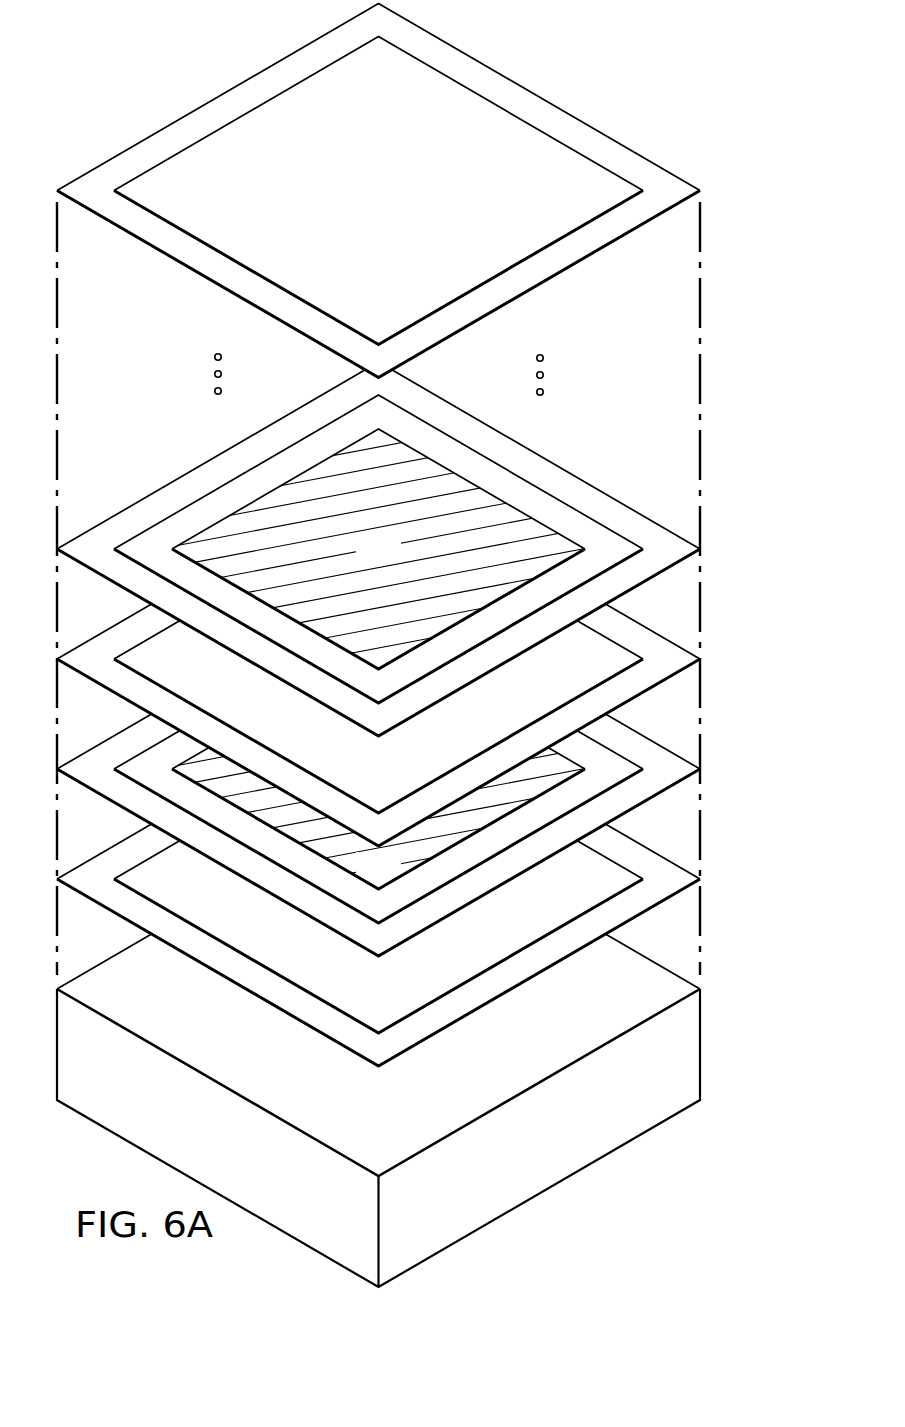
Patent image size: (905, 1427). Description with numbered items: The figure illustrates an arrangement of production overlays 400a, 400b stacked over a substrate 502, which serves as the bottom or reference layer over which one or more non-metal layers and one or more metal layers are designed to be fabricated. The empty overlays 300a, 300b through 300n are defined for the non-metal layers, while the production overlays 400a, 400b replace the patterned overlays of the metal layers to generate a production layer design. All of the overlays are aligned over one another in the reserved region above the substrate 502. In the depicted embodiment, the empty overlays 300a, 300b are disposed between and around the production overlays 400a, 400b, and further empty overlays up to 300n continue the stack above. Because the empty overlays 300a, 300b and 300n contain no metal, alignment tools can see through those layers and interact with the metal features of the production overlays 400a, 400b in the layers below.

The empty overlay 300n is at (566, 104).
The production overlay 400b is at (684, 532).
The empty overlay 300b is at (684, 642).
The production overlay 400a is at (684, 752).
The empty overlay 300a is at (684, 862).
The substrate 502 is at (548, 1200).